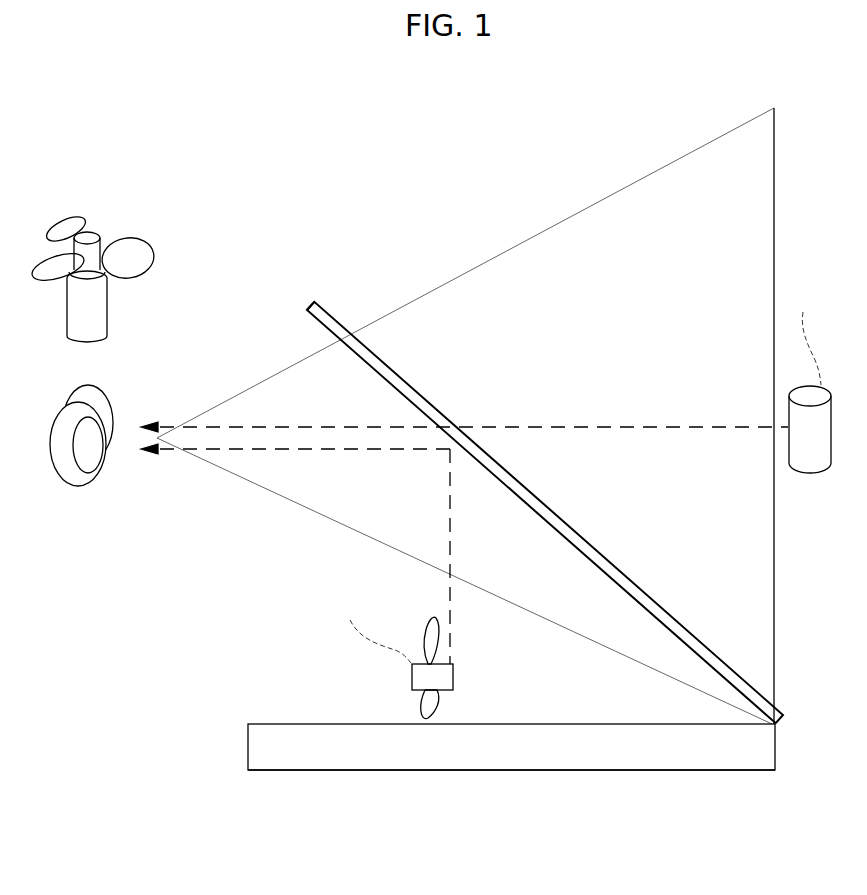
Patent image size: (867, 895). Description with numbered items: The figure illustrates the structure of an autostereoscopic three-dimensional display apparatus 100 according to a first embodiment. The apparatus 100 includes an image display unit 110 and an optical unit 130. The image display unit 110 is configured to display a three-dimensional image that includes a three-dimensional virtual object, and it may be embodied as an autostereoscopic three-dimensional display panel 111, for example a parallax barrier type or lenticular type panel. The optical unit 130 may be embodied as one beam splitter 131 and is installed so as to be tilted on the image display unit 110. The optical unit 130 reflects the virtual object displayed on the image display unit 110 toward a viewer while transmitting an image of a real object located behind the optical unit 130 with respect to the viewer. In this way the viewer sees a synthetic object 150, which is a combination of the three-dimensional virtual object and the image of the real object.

The autostereoscopic 3D display apparatus 100 is at (290, 96).
The image display unit 110 is at (244, 778).
The autostereoscopic 3D display panel 111 is at (540, 773).
The optical unit 130 is at (345, 293).
The beam splitter 131 is at (321, 295).
The synthetic object 150 is at (121, 218).